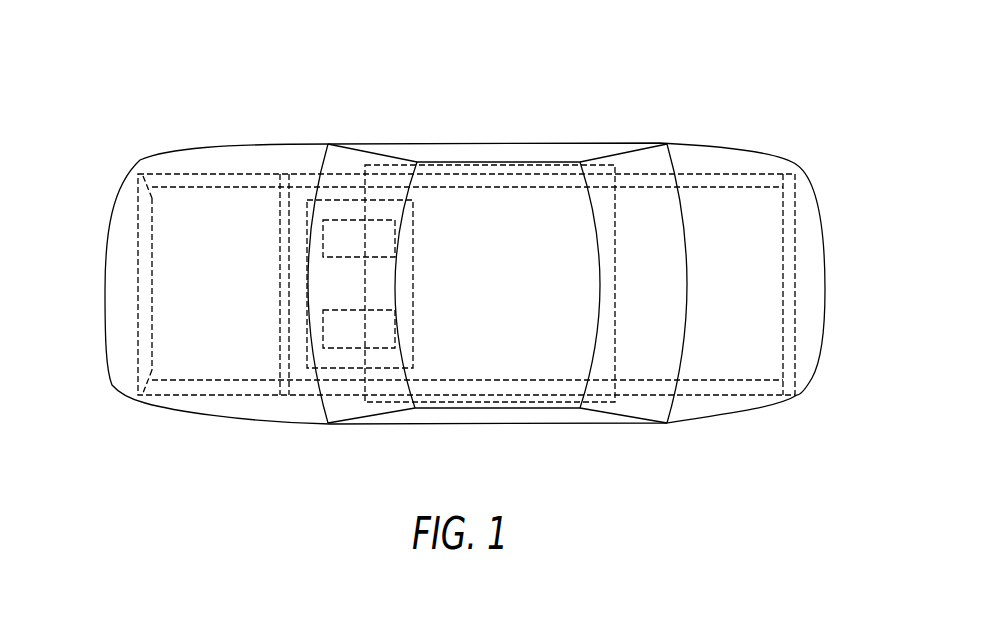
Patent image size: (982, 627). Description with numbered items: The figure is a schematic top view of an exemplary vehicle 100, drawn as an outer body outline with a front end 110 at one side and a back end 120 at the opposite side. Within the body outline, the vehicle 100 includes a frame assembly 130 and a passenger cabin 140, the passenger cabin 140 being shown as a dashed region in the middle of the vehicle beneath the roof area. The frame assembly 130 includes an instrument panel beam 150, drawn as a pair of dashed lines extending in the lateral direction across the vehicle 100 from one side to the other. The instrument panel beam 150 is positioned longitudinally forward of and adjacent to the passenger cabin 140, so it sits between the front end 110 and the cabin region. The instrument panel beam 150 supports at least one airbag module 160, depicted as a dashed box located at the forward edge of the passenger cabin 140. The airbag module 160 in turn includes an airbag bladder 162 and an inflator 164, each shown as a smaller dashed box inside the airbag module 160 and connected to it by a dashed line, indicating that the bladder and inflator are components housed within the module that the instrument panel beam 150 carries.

The vehicle 100 is at (446, 263).
The front end 110 is at (110, 372).
The back end 120 is at (817, 370).
The frame assembly 130 is at (697, 170).
The passenger cabin 140 is at (495, 298).
The instrument panel beam 150 is at (287, 375).
The airbag module 160 is at (360, 284).
The airbag bladder 162 is at (367, 252).
The inflator 164 is at (367, 342).